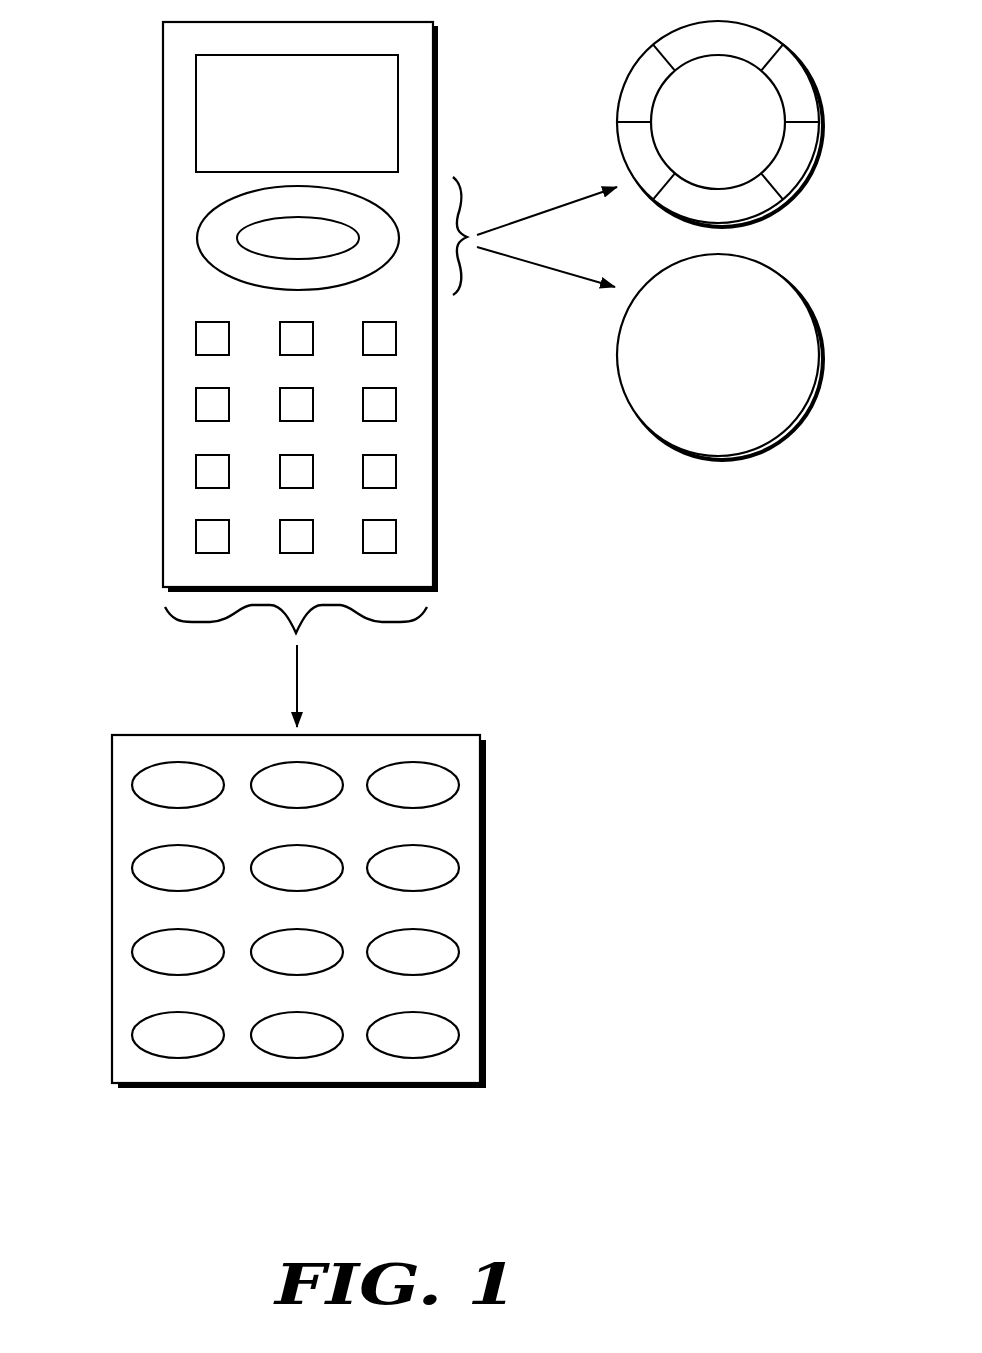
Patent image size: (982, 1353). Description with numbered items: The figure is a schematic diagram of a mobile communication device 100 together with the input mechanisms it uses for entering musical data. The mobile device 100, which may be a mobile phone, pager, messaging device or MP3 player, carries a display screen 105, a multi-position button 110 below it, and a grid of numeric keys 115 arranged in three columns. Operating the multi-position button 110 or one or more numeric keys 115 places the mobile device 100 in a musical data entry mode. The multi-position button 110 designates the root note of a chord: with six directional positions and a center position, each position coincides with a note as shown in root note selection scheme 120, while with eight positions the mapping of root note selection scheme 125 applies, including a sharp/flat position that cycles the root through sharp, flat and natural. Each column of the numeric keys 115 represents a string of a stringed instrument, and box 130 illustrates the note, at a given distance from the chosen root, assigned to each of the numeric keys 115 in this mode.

The mobile communication device 100 is at (346, 374).
The display screen 105 is at (196, 55).
The multi-position button 110 is at (210, 210).
The numeric keys 115 is at (196, 305).
The root note selection scheme 120 is at (645, 51).
The root note selection scheme 125 is at (618, 332).
The box 130 is at (480, 735).